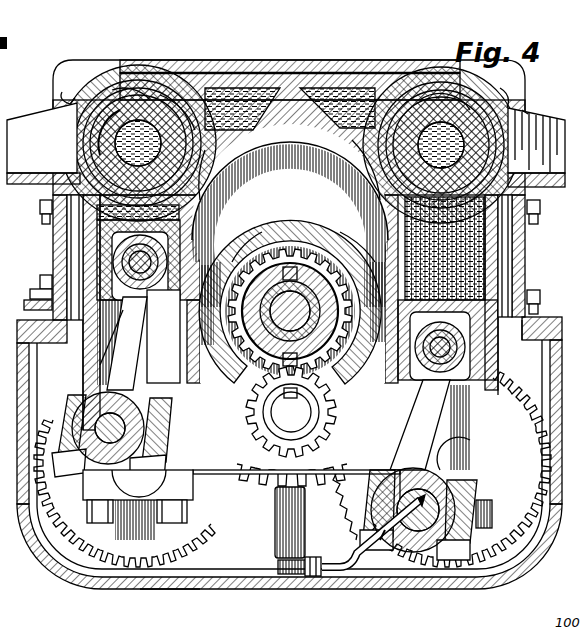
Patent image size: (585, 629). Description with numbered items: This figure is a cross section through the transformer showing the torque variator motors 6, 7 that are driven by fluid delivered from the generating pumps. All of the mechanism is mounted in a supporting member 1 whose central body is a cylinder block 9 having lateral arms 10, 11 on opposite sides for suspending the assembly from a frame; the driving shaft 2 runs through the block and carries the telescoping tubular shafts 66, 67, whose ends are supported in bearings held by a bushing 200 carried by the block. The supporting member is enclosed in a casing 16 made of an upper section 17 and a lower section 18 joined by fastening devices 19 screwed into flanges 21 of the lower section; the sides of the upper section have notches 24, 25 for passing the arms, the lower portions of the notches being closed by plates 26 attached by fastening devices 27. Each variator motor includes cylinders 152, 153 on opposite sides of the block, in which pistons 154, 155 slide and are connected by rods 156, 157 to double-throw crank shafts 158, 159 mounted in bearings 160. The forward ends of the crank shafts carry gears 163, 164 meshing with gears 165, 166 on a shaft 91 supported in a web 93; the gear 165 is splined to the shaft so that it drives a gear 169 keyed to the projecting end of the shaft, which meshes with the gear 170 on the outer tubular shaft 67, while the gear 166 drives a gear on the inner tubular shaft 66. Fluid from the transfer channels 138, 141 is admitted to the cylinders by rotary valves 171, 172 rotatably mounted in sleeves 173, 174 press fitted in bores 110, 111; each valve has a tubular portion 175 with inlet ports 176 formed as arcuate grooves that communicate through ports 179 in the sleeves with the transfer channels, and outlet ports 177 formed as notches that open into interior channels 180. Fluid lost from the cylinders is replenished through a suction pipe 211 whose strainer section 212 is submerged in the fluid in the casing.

The supporting member 1 is at (310, 70).
The driving shaft 2 is at (232, 262).
The torque variator motor 6 is at (83, 343).
The torque variator motor 7 is at (500, 385).
The cylinder block 9 is at (528, 198).
The lateral arm 10 is at (48, 116).
The lateral arm 11 is at (540, 120).
The casing 16 is at (24, 308).
The upper section 17 is at (236, 70).
The lower section 18 is at (160, 585).
The fastening device 19 is at (14, 290).
The flange 21 is at (533, 335).
The notch 24 is at (66, 87).
The notch 25 is at (530, 115).
The plate 26 is at (60, 240).
The fastening device 27 is at (527, 230).
The tubular shaft 66 is at (315, 262).
The tubular shaft 67 is at (312, 280).
The shaft 91 is at (300, 425).
The web 93 is at (240, 478).
The bore 110 is at (112, 90).
The bore 111 is at (445, 95).
The transfer channel 138 is at (255, 95).
The transfer channel 141 is at (345, 95).
The cylinder 152 is at (95, 362).
The cylinder 153 is at (375, 255).
The piston 154 is at (178, 302).
The piston 155 is at (408, 395).
The rod 156 is at (128, 372).
The rod 157 is at (418, 440).
The crank shaft 158 is at (108, 480).
The crank shaft 159 is at (450, 455).
The bearing 160 is at (205, 485).
The gear 163 is at (208, 520).
The gear 164 is at (398, 548).
The gear 165 is at (272, 496).
The gear 166 is at (345, 478).
The gear 169 is at (262, 420).
The gear 170 is at (300, 255).
The rotary valve 171 is at (180, 95).
The rotary valve 172 is at (528, 100).
The sleeve 173 is at (150, 80).
The sleeve 174 is at (395, 95).
The tubular portion 175 is at (205, 172).
The inlet port 176 is at (376, 175).
The outlet port 177 is at (100, 155).
The port 179 is at (370, 158).
The interior channel 180 is at (120, 140).
The bushing 200 is at (262, 232).
The suction pipe 211 is at (380, 522).
The strainer section 212 is at (278, 564).